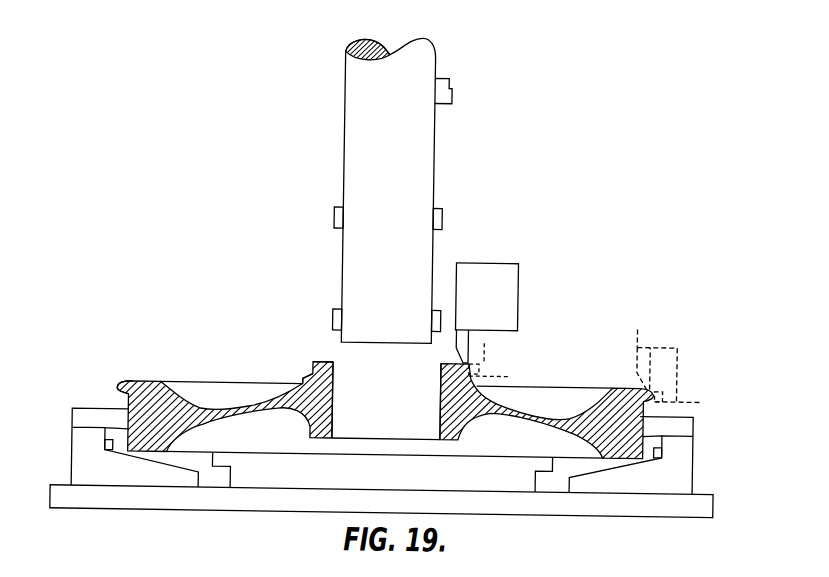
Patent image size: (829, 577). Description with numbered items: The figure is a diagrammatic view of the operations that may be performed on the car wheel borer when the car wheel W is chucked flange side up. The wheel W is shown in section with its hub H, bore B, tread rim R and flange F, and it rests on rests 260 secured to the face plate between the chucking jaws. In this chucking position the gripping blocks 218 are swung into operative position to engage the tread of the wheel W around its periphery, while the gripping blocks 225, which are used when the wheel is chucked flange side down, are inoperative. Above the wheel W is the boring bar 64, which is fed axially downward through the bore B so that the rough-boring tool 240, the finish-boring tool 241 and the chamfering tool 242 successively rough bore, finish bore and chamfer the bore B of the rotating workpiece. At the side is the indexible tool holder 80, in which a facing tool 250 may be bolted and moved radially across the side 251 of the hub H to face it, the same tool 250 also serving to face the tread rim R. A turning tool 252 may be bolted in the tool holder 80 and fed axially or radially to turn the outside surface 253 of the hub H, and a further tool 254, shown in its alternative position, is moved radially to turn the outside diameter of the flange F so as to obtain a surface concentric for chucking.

The boring bar 64 is at (416, 164).
The chamfering tool 242 is at (441, 82).
The finish-boring tool 241 is at (439, 214).
The rough-boring tool 240 is at (331, 316).
The indexible tool holder 80 is at (476, 269).
The facing tool 250 is at (457, 344).
The turning tool 252 is at (485, 365).
The tool for turning flange 254 is at (674, 389).
The gripping block 218 is at (88, 421).
The gripping block 225 is at (110, 453).
The rest 260 is at (232, 474).
The side of hub 251 is at (316, 361).
The outside surface of hub 253 is at (309, 372).
The work W is at (230, 408).
The tread rim R is at (140, 386).
The flange F is at (118, 387).
The hub H is at (333, 396).
The bore B is at (437, 440).